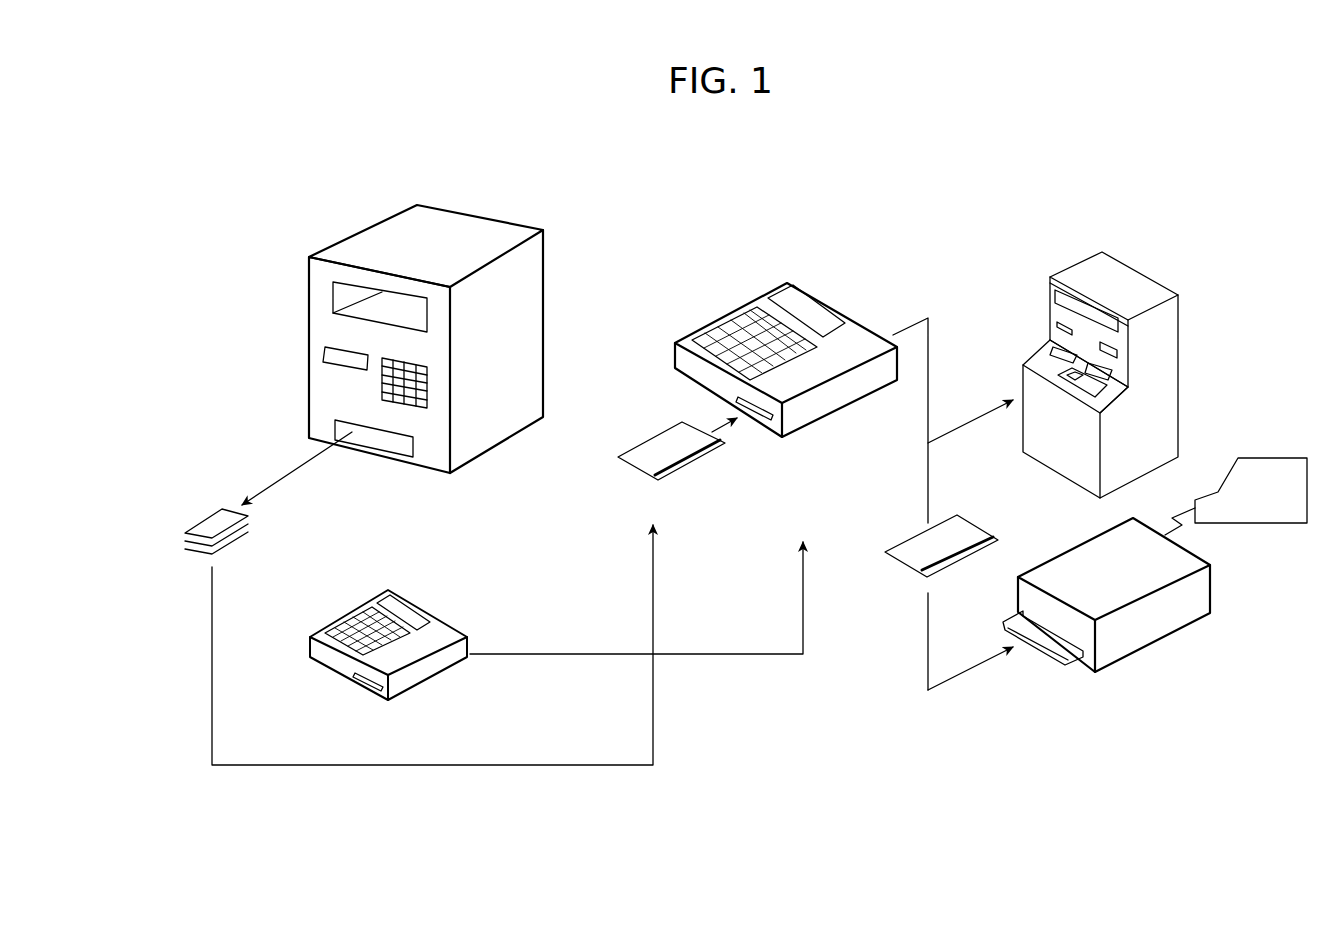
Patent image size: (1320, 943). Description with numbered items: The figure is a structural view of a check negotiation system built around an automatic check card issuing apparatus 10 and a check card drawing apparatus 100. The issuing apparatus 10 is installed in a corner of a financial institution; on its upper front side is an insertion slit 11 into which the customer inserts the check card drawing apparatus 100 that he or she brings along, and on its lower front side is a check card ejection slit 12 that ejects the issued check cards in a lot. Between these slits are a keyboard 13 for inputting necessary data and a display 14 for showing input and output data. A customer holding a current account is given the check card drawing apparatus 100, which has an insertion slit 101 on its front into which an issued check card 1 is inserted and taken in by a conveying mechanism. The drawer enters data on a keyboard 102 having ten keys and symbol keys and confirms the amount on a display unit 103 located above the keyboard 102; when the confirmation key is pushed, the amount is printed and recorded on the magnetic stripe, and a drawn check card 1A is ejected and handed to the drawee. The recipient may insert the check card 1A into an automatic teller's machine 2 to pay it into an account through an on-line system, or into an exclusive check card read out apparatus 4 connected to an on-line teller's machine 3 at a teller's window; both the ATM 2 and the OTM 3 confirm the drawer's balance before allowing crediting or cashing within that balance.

The automatic check card issuing apparatus 10 is at (365, 216).
The insertion slit 11 is at (353, 293).
The check card ejection slit 12 is at (403, 449).
The keyboard 13 is at (432, 402).
The display 14 is at (323, 356).
The check card 1 is at (677, 511).
The check card (drawn check) 1A is at (977, 523).
The check card drawing apparatus 100 is at (432, 607).
The insertion slit 101 is at (765, 418).
The keyboard 102 is at (712, 352).
The display unit 103 is at (827, 307).
The automatic teller's machine (ATM) 2 is at (1185, 415).
The on-line teller's machine (OTM) 3 is at (1267, 458).
The check card read out apparatus 4 is at (1170, 637).